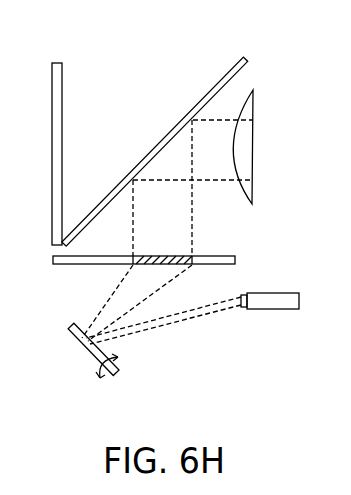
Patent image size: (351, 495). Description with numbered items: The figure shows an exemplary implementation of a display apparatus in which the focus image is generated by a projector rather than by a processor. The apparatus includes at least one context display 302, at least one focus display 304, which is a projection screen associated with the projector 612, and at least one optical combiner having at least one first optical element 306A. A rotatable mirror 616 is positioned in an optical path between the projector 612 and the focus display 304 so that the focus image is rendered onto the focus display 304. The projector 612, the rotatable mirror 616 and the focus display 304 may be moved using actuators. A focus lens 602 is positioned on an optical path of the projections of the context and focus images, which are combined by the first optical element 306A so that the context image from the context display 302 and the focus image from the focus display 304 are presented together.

The context display 302 is at (63, 76).
The first optical element 306A is at (232, 63).
The focus lens 602 is at (253, 196).
The focus display 304 is at (72, 265).
The projector 612 is at (280, 310).
The rotatable mirror 616 is at (88, 348).